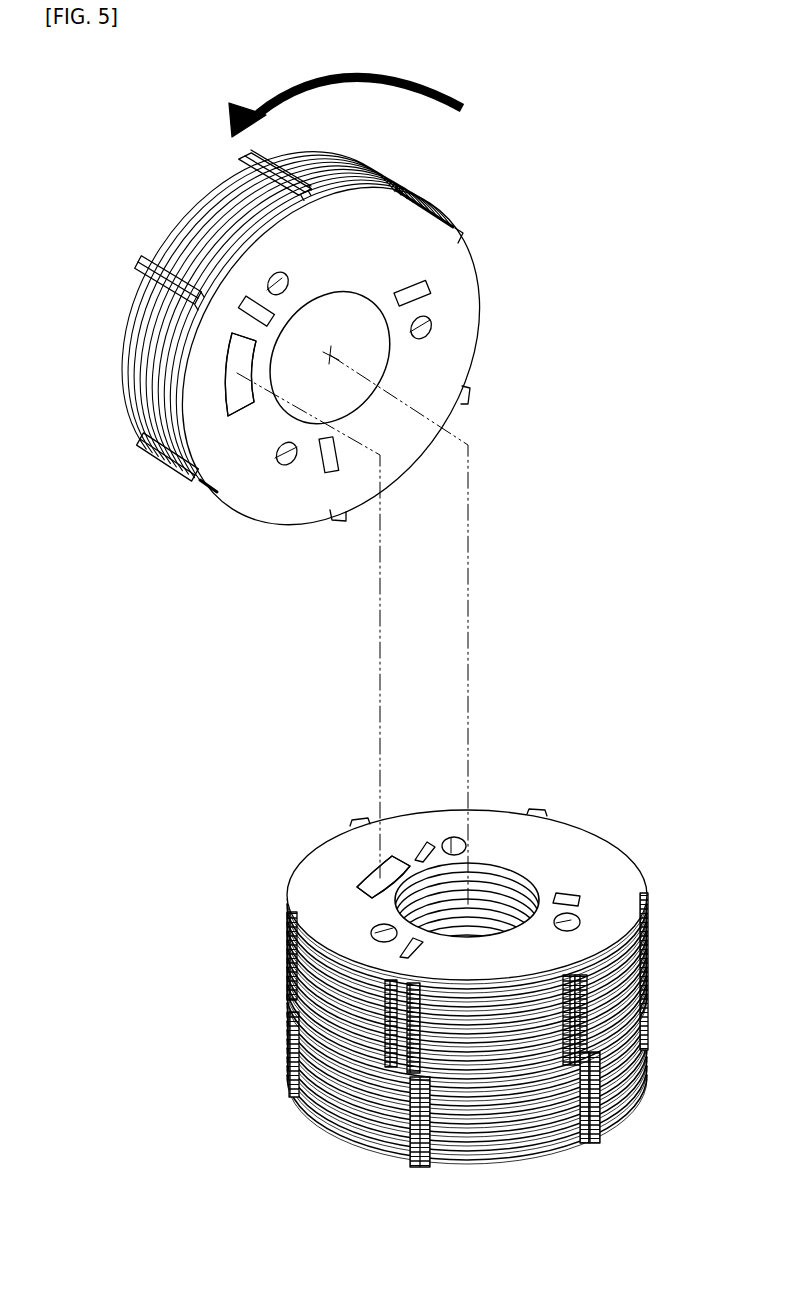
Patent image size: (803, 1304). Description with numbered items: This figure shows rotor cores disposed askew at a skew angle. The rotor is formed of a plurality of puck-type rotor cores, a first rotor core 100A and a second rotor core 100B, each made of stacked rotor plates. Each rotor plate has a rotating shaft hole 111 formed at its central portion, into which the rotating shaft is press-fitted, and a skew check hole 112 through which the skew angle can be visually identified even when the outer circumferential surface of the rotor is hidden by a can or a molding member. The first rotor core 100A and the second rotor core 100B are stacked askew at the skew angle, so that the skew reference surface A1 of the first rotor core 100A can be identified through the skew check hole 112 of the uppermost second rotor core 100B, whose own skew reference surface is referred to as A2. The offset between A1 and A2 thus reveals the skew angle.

The first rotor core 100A is at (292, 998).
The second rotor core 100B is at (140, 284).
The rotating shaft hole 111 is at (389, 352).
The skew check hole 112 is at (223, 372).
The skew reference surface of the first rotor core A1 is at (363, 890).
The skew reference surface of the uppermost second rotor core A2 is at (245, 400).